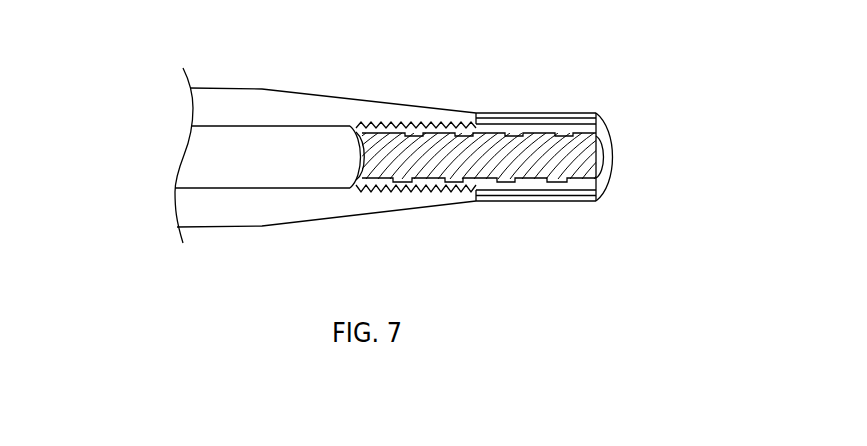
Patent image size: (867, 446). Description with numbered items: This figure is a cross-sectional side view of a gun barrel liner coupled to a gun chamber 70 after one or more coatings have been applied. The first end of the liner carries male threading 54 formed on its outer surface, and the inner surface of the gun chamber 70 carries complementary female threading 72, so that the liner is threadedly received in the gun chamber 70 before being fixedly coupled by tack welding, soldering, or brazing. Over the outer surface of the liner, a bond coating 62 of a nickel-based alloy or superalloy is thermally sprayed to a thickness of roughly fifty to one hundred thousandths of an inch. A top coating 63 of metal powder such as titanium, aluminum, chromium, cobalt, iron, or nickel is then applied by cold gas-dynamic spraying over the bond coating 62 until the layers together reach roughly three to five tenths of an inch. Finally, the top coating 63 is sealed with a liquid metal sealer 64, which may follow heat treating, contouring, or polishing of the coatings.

The gun chamber 70 is at (249, 237).
The female threading 72 is at (423, 123).
The male threading 54 is at (433, 195).
The bond coating 62 is at (547, 198).
The top coating 63 is at (570, 203).
The liquid metal sealer 64 is at (560, 110).